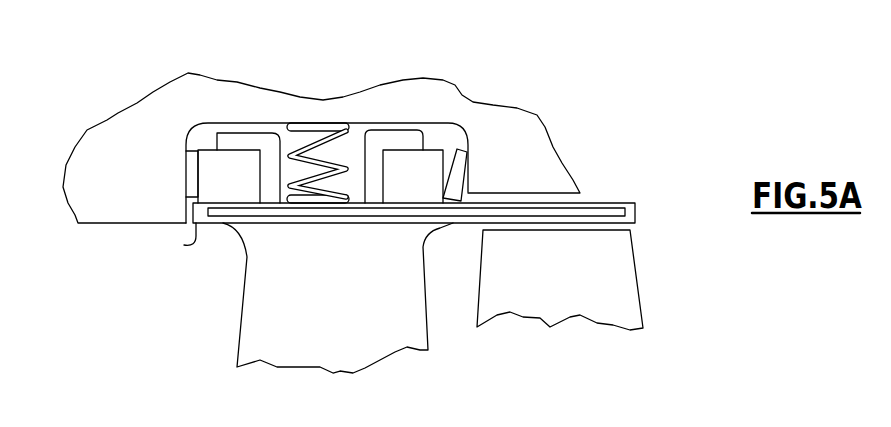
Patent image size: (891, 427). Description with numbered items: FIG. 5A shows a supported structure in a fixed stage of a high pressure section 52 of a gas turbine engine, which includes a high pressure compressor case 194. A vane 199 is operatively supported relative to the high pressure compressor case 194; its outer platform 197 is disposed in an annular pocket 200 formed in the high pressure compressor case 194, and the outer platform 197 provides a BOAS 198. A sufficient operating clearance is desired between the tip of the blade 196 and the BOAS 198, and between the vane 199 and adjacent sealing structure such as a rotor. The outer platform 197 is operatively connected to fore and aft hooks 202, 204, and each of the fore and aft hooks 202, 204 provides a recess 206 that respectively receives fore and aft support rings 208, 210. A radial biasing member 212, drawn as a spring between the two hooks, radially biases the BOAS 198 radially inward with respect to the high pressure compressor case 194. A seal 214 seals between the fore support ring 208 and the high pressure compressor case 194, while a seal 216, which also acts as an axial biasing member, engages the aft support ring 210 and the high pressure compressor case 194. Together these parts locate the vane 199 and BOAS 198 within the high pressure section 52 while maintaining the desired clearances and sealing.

The high pressure section 52 is at (479, 65).
The high pressure compressor case 194 is at (530, 123).
The blade 196 is at (626, 277).
The outer platform 197 is at (168, 243).
The BOAS 198 is at (630, 203).
The vane 199 is at (258, 312).
The annular pocket 200 is at (447, 133).
The fore hook 202 is at (252, 140).
The aft hook 204 is at (398, 138).
The recess 206 is at (260, 172).
The fore support ring 208 is at (213, 168).
The aft support ring 210 is at (431, 158).
The radial biasing member 212 is at (313, 150).
The seal 214 is at (190, 179).
The seal 216 is at (458, 172).